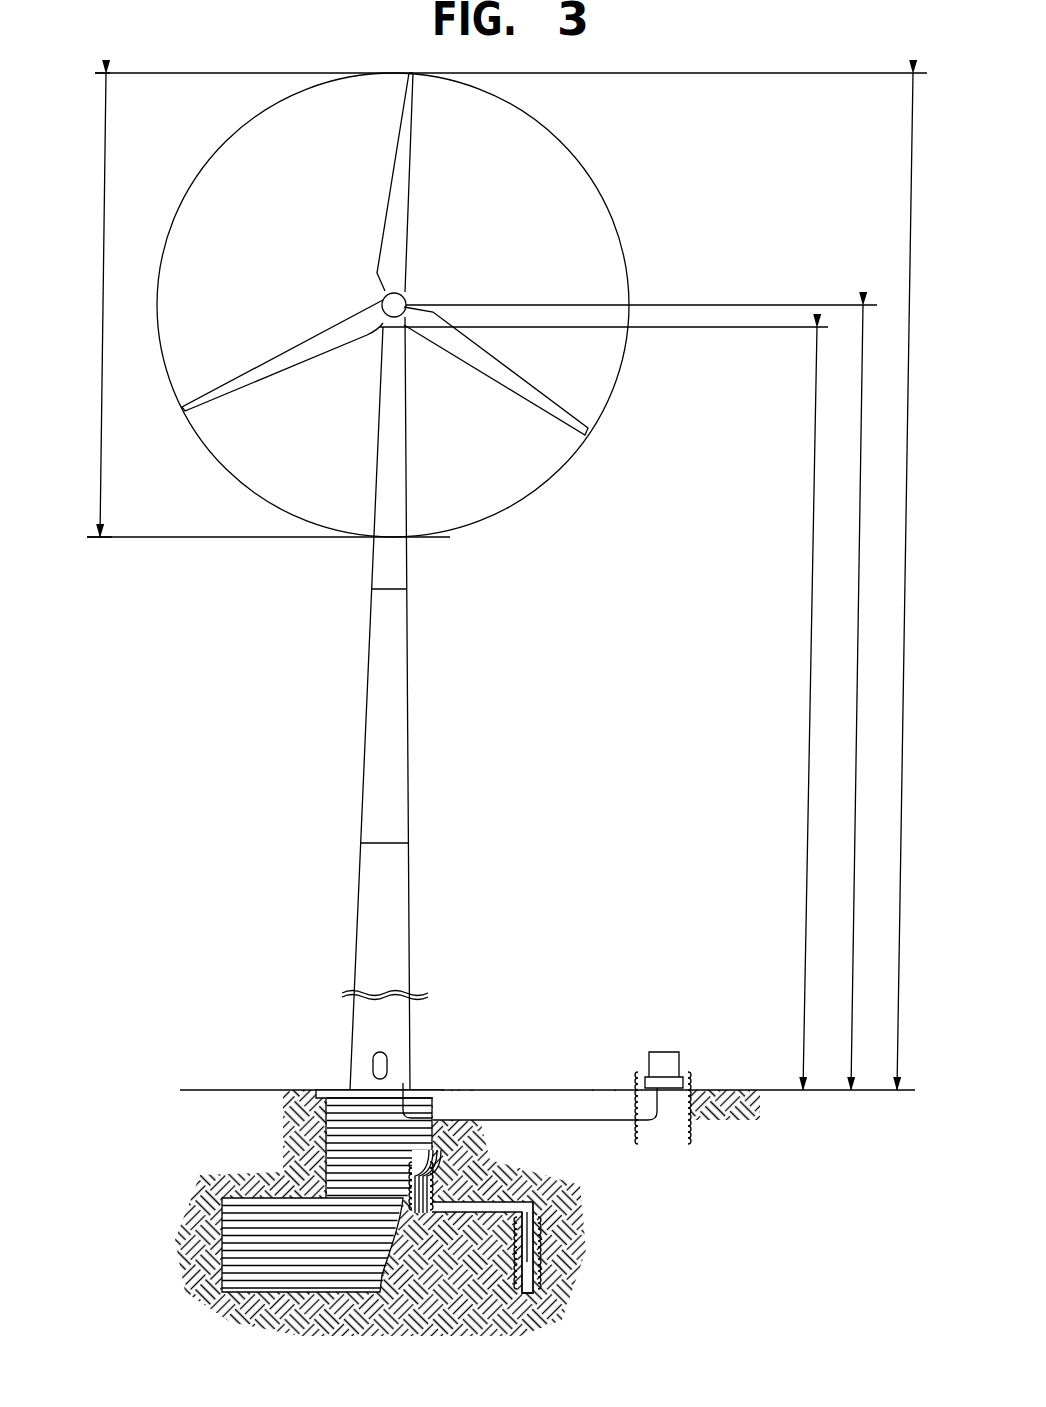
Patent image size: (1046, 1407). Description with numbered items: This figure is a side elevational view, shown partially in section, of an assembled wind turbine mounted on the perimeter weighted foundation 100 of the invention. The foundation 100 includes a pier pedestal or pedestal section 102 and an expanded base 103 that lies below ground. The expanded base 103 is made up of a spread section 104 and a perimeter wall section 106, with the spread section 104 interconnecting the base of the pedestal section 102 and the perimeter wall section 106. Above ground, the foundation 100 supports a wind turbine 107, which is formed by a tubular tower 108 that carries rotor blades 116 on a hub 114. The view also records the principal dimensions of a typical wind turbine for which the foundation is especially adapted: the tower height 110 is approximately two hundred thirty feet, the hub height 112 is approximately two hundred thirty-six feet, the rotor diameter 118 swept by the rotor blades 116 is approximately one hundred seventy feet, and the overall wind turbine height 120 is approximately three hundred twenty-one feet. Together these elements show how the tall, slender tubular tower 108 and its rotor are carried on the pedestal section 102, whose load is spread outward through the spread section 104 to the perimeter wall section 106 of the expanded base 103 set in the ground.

The perimeter weighted foundation 100 is at (167, 1240).
The pedestal section 102 is at (433, 1162).
The expanded base 103 is at (204, 1210).
The spread section 104 is at (510, 1197).
The perimeter wall section 106 is at (538, 1262).
The wind turbine 107 is at (393, 581).
The tubular tower 108 is at (408, 728).
The tower height 110 is at (814, 708).
The hub height 112 is at (858, 697).
The hub 114 is at (391, 291).
The rotor blades 116 is at (398, 203).
The rotor diameter 118 is at (104, 305).
The overall wind turbine height 120 is at (910, 581).